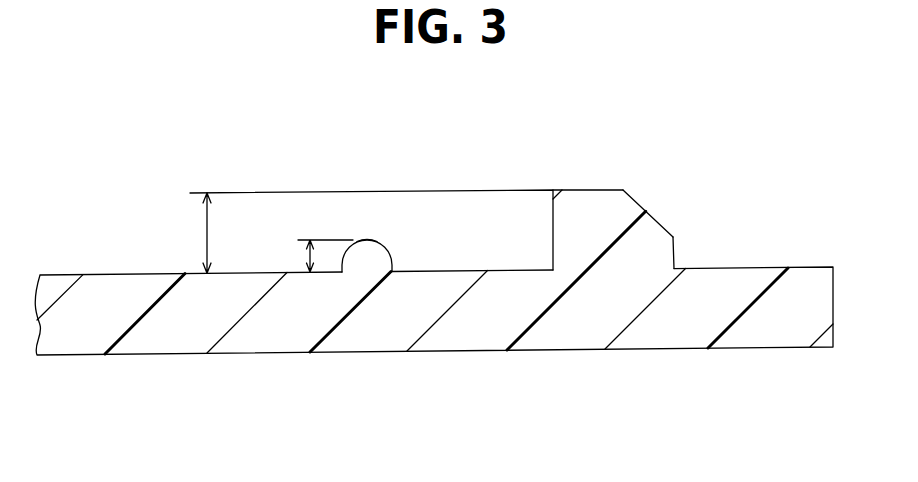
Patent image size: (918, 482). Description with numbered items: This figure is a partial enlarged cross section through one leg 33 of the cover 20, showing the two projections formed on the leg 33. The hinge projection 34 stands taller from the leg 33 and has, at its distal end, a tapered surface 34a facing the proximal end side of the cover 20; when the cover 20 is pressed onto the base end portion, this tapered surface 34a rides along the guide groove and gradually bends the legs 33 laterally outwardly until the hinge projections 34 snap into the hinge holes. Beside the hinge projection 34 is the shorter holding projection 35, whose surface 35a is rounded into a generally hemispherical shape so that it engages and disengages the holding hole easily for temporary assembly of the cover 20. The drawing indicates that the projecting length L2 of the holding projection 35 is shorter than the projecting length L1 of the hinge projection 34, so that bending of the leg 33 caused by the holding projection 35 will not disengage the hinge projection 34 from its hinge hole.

The cover 20 is at (309, 158).
The leg 33 is at (652, 346).
The hinge projection 34 is at (593, 200).
The tapered surface 34a is at (655, 217).
The holding projection 35 is at (382, 256).
The surface of holding projection 35a is at (367, 240).
The projecting length of hinge projection L1 is at (207, 229).
The projecting length of holding projection L2 is at (310, 258).